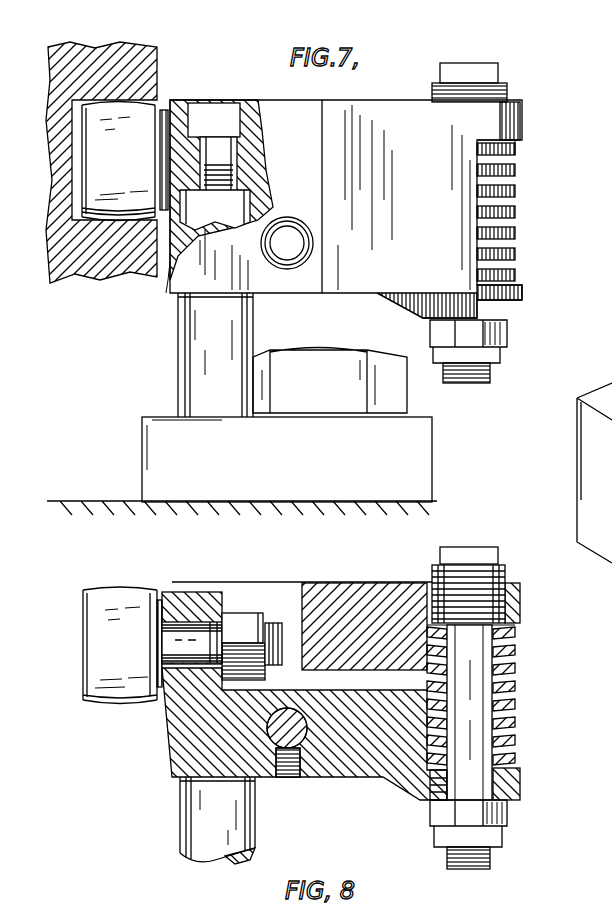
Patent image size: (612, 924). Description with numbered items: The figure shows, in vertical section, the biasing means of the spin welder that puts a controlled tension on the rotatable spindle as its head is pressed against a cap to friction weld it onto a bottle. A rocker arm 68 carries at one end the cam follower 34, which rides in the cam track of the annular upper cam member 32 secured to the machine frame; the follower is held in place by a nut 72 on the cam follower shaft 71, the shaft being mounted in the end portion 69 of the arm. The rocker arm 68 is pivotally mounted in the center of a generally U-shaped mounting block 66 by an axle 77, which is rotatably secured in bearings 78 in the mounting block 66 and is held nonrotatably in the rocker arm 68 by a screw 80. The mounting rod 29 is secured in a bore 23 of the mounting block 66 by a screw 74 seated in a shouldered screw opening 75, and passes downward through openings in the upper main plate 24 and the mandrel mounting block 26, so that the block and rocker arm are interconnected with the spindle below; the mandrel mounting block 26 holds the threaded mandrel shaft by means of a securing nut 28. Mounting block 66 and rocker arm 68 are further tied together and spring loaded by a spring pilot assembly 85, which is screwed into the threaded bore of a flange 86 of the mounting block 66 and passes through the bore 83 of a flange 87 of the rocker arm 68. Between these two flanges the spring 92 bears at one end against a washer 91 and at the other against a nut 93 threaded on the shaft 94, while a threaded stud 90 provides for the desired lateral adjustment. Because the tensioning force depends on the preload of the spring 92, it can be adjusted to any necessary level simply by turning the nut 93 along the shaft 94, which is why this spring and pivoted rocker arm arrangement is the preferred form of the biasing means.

In FIG. 7, the bore 23 is at (167, 262).
In FIG. 7, the upper main plate 24 is at (438, 506).
In FIG. 7, the mandrel mounting block 26 is at (415, 444).
In FIG. 7, the securing nut 28 is at (380, 367).
In FIG. 7, the mounting rod 29 is at (200, 364).
In FIG. 8, the mounting rod 29 is at (190, 803).
In FIG. 7, the upper cam member 32 is at (104, 56).
In FIG. 7, the cam follower 34 is at (138, 118).
In FIG. 8, the cam follower 34 is at (121, 597).
In FIG. 7, the mounting block 66 is at (360, 273).
In FIG. 8, the rocker arm 68 is at (358, 771).
In FIG. 8, the upper block 69 is at (186, 600).
In FIG. 8, the cam follower shaft 71 is at (277, 625).
In FIG. 8, the nut 72 is at (243, 622).
In FIG. 7, the screw 74 is at (206, 117).
In FIG. 7, the shouldered screw opening 75 is at (246, 112).
In FIG. 8, the axle 77 is at (303, 746).
In FIG. 7, the bearing 78 is at (292, 258).
In FIG. 8, the screw 80 is at (287, 778).
In FIG. 8, the bore 83 is at (522, 778).
In FIG. 7, the spring pilot assembly 85 is at (479, 64).
In FIG. 8, the flange 86 is at (521, 598).
In FIG. 8, the flange 87 is at (521, 793).
In FIG. 7, the threaded stud 90 is at (508, 97).
In FIG. 8, the threaded stud 90 is at (506, 575).
In FIG. 7, the washer 91 is at (518, 147).
In FIG. 8, the washer 91 is at (517, 629).
In FIG. 7, the spring 92 is at (516, 205).
In FIG. 8, the spring 92 is at (517, 683).
In FIG. 7, the nut 93 is at (501, 338).
In FIG. 8, the nut 93 is at (507, 830).
In FIG. 7, the shaft 94 is at (490, 375).
In FIG. 8, the shaft 94 is at (472, 712).